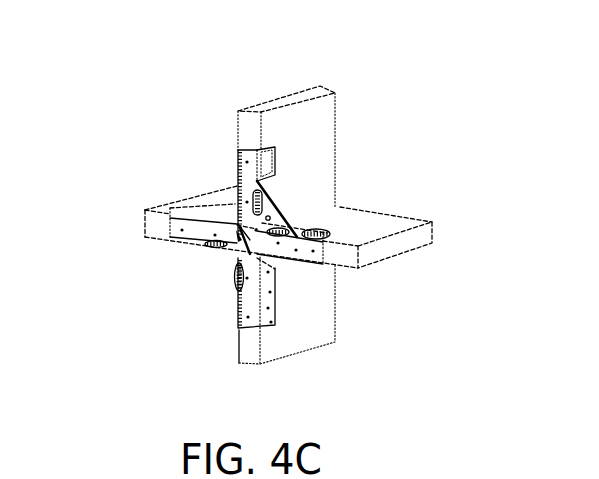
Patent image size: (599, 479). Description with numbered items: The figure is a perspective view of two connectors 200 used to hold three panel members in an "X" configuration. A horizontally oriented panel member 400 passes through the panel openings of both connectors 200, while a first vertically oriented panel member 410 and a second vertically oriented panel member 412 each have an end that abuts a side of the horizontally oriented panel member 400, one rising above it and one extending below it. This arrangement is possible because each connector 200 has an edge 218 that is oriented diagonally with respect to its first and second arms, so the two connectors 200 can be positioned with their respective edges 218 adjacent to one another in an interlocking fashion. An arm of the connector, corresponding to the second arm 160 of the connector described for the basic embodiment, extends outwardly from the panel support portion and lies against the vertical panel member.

The second arm 160 is at (243, 185).
The connector 200 is at (237, 298).
The edge 218 is at (240, 231).
The horizontally oriented panel member 400 is at (342, 215).
The first vertically oriented panel member 410 is at (302, 144).
The second vertically oriented panel member 412 is at (308, 333).